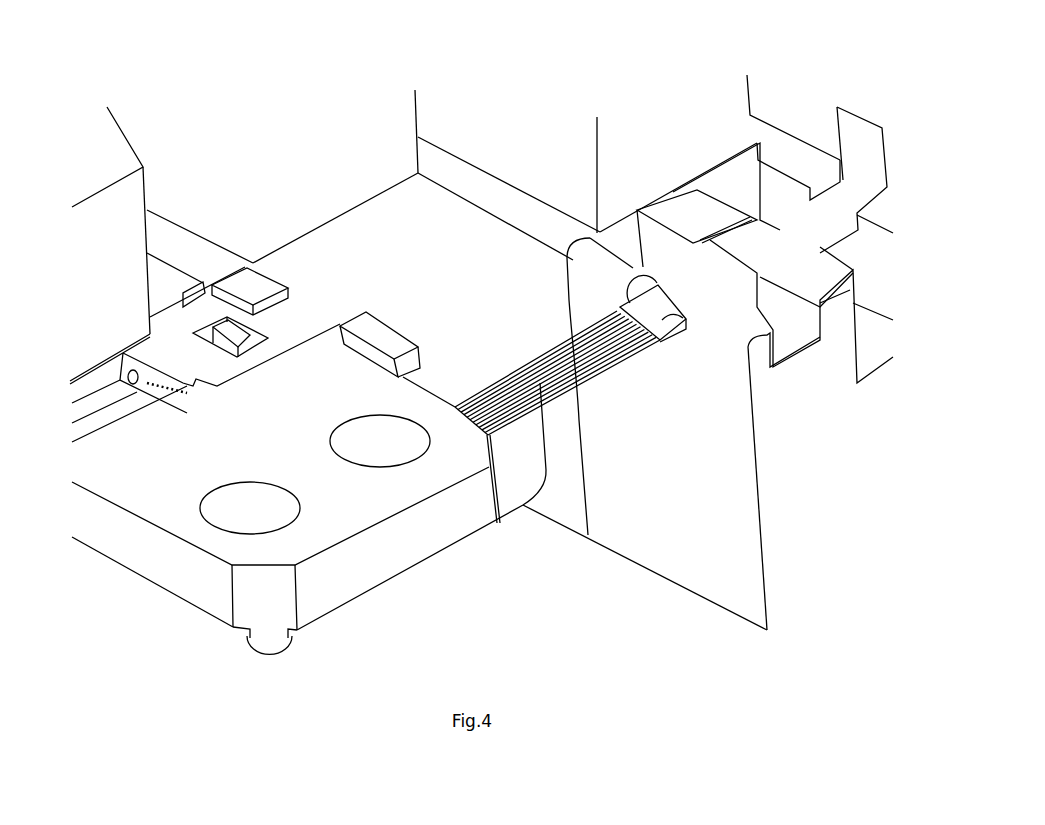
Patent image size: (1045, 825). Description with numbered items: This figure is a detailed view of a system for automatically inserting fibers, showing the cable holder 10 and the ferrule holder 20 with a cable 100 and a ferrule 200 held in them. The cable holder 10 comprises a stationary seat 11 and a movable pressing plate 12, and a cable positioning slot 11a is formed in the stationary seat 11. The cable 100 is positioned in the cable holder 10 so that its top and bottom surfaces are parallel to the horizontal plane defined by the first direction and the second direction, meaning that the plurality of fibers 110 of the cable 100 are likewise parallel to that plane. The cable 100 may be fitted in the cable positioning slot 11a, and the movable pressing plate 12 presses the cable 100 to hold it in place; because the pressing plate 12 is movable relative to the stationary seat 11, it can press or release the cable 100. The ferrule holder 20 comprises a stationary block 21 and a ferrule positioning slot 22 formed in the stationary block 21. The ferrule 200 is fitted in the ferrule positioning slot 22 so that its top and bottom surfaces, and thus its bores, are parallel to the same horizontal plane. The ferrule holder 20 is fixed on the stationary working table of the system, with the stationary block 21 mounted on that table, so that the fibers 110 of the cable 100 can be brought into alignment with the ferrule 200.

The cable holder 10 is at (655, 347).
The stationary seat 11 is at (702, 428).
The cable positioning slot 11a is at (640, 273).
The movable pressing plate 12 is at (692, 273).
The ferrule holder 20 is at (262, 256).
The stationary block 21 is at (182, 247).
The ferrule positioning slot 22 is at (357, 347).
The cable 100 is at (660, 287).
The fibers 110 is at (523, 507).
The ferrule 200 is at (267, 303).